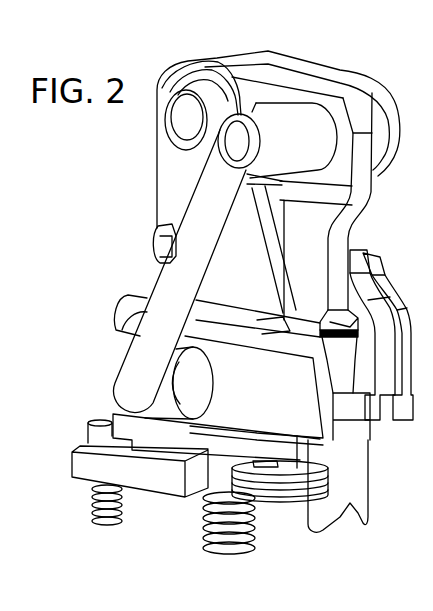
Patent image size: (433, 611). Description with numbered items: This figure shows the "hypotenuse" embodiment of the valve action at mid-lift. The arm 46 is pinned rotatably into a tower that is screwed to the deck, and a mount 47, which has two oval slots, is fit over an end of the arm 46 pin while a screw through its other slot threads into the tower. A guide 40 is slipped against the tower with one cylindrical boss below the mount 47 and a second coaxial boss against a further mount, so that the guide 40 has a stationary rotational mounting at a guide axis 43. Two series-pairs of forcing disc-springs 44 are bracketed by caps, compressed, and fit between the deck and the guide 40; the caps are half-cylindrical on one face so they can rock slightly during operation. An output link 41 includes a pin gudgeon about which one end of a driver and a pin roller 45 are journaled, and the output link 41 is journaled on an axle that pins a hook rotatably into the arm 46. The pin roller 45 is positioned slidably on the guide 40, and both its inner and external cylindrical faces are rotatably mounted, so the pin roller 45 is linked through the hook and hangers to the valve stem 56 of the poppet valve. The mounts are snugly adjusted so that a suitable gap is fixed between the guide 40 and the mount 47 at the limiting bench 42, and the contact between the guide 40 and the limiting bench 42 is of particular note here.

The guide 40 is at (299, 404).
The output link 41 is at (188, 289).
The limiting bench 42 is at (280, 320).
The guide axis 43 is at (132, 385).
The forcing disc-springs 44 is at (322, 470).
The pin roller 45 is at (203, 390).
The arm 46 is at (273, 92).
The mount 47 is at (260, 289).
The valve stem 56 is at (363, 497).